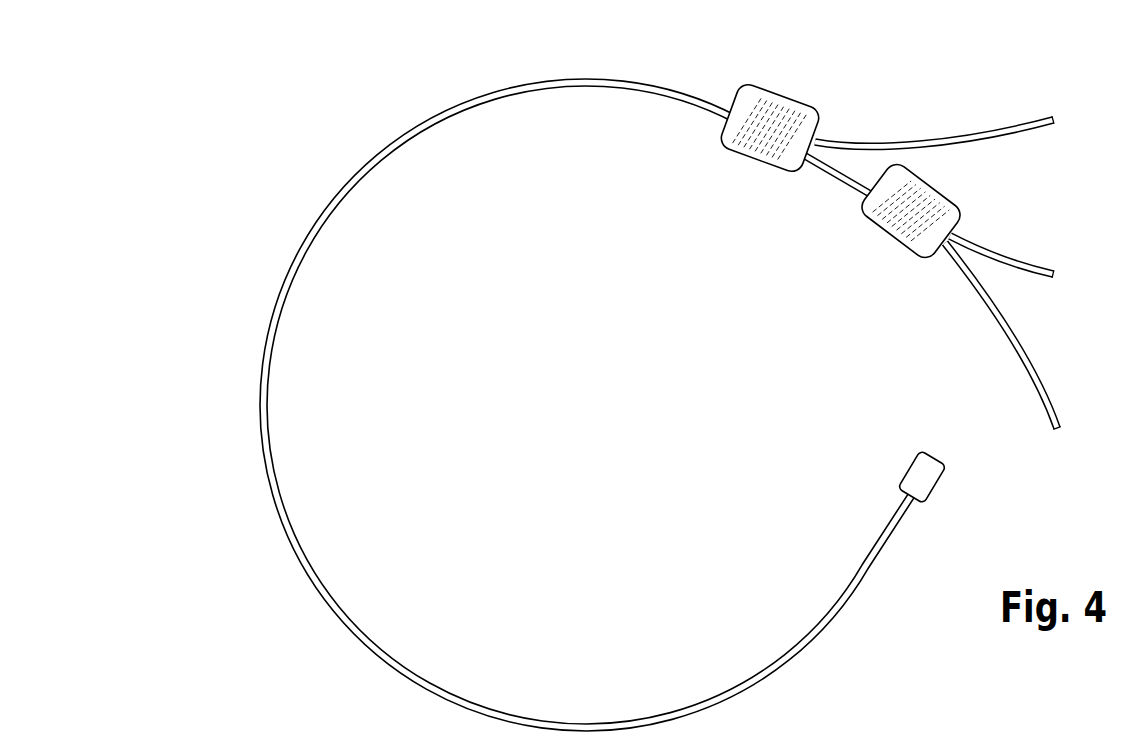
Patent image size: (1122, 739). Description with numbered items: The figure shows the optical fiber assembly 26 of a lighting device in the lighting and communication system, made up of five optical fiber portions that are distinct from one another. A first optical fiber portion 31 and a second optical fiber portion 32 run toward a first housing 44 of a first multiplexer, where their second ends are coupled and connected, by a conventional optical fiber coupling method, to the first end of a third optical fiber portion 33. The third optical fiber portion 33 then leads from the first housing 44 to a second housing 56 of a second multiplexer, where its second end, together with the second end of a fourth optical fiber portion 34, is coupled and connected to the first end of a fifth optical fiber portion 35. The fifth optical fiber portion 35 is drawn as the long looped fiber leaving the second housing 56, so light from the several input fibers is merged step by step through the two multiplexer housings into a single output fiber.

The optical fiber assembly 26 is at (689, 365).
The first optical fiber portion 31 is at (1043, 380).
The second optical fiber portion 32 is at (1017, 258).
The third optical fiber portion 33 is at (840, 173).
The fourth optical fiber portion 34 is at (975, 135).
The fifth optical fiber portion 35 is at (443, 115).
The first housing 44 is at (897, 233).
The second housing 56 is at (770, 100).